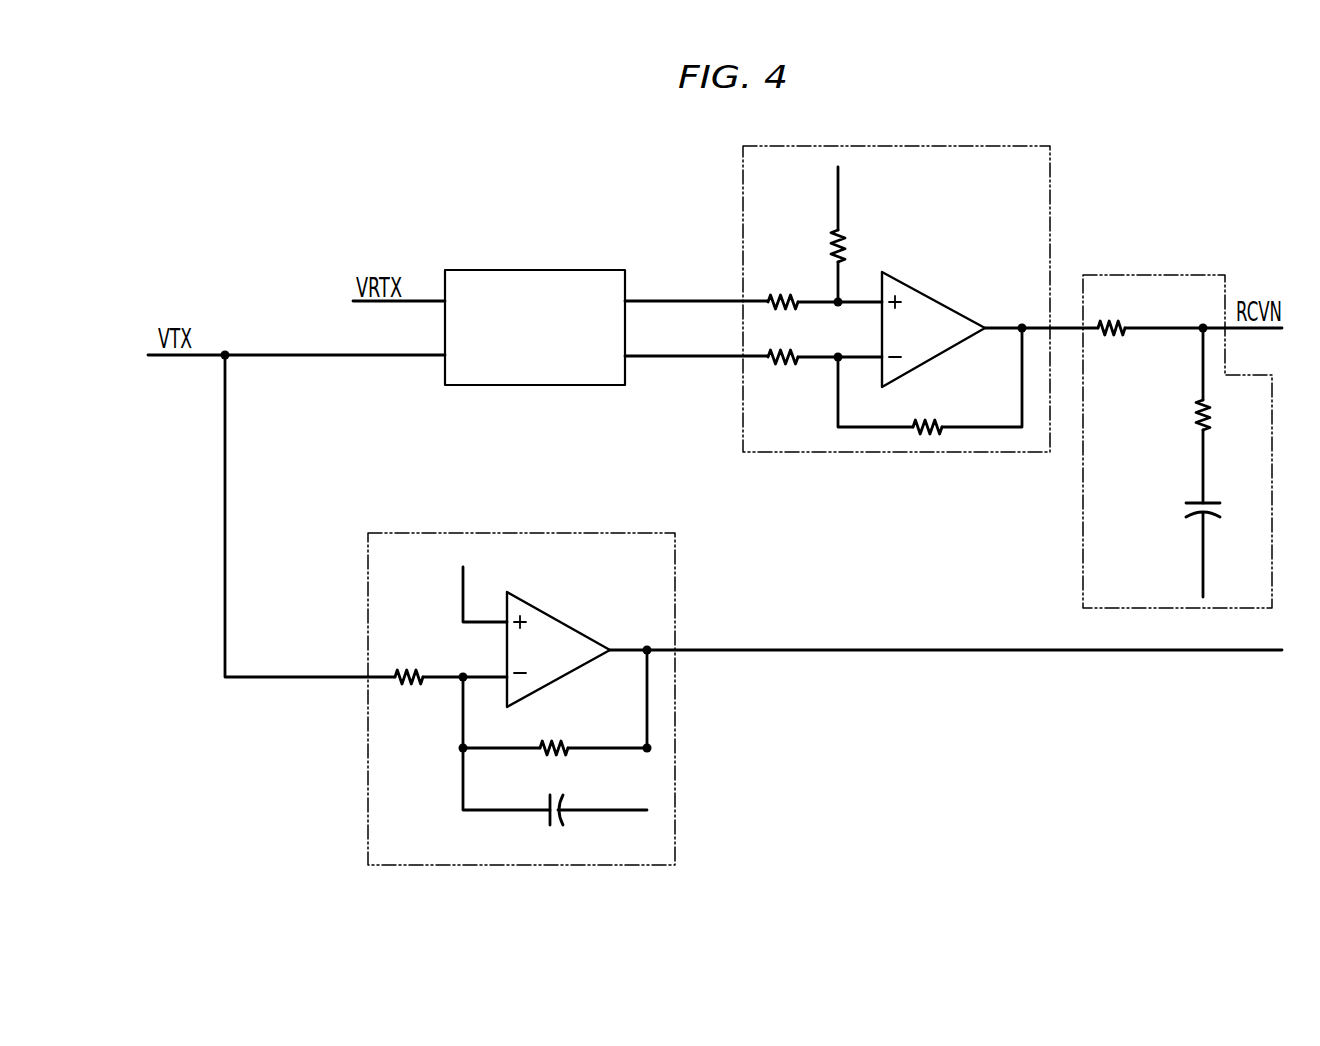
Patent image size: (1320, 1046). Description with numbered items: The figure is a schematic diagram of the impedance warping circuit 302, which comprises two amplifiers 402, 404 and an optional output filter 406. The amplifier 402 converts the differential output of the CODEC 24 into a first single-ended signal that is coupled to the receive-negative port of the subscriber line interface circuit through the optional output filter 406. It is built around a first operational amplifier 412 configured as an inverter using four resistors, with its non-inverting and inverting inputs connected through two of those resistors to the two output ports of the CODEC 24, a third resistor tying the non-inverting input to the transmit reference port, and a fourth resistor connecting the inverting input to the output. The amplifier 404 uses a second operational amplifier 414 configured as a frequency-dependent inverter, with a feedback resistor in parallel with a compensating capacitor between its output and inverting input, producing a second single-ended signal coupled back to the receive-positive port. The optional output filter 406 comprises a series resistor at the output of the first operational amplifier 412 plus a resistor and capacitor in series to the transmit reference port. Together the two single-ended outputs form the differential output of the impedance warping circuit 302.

The CODEC 24 is at (527, 270).
The amplifier 402 is at (975, 146).
The amplifier 404 is at (600, 533).
The optional output filter 406 is at (1152, 275).
The first operational amplifier 412 is at (927, 295).
The second operational amplifier 414 is at (555, 617).
The impedance warping circuit 302 is at (1064, 768).